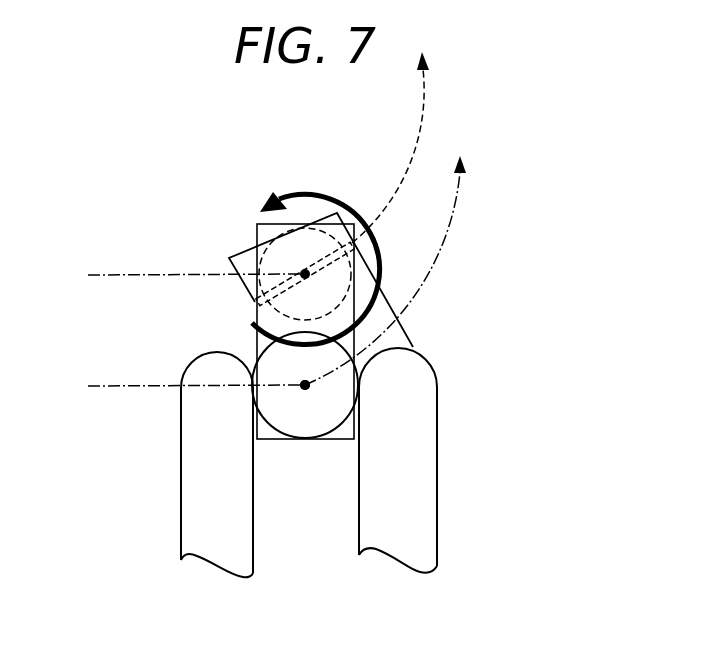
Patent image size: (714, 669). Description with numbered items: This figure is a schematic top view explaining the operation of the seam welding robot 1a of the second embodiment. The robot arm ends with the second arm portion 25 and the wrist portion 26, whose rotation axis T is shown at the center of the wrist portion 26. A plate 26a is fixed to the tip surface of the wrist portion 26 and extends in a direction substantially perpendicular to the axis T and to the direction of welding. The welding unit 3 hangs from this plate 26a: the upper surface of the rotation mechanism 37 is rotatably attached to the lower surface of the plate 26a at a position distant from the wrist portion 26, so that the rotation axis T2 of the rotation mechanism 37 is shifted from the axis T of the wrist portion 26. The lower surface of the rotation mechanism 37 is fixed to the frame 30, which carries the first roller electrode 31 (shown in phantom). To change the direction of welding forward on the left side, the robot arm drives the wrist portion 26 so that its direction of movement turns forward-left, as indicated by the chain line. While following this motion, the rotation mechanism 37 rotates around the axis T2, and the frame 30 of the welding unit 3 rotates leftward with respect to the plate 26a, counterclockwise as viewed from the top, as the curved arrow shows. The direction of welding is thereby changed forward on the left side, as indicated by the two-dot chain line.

The seam welding robot 1a is at (128, 158).
The welding unit 3 is at (457, 267).
The second arm portion 25 is at (420, 523).
The wrist portion 26 is at (273, 363).
The plate 26a is at (332, 442).
The frame 30 is at (395, 338).
The first roller electrode 31 is at (324, 262).
The rotation mechanism 37 is at (338, 214).
The axis T is at (305, 390).
The rotation axis T2 is at (303, 272).